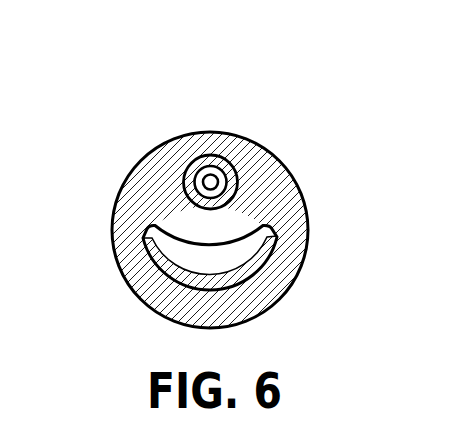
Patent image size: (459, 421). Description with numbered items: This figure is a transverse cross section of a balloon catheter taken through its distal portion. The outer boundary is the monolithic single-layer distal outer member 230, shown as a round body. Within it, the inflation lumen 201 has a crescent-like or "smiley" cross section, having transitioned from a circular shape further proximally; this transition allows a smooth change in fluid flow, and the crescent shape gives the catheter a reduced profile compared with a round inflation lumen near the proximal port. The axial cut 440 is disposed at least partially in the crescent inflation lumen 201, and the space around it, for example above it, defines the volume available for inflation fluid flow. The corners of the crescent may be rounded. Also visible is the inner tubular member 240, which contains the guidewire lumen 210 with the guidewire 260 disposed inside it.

The inflation lumen 201 is at (270, 227).
The monolithic single-layer distal outer member 230 is at (143, 157).
The guidewire lumen 210 is at (209, 175).
The guidewire 260 is at (215, 176).
The inner tubular member 240 is at (236, 173).
The axial cut 440 is at (260, 264).